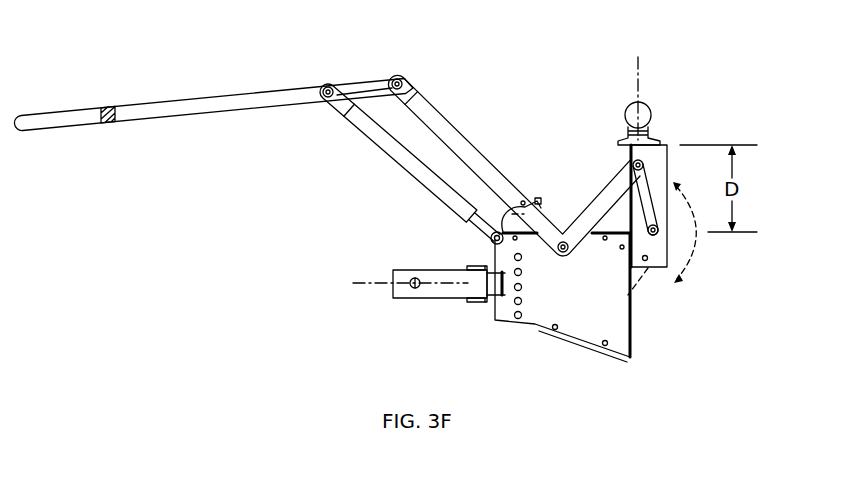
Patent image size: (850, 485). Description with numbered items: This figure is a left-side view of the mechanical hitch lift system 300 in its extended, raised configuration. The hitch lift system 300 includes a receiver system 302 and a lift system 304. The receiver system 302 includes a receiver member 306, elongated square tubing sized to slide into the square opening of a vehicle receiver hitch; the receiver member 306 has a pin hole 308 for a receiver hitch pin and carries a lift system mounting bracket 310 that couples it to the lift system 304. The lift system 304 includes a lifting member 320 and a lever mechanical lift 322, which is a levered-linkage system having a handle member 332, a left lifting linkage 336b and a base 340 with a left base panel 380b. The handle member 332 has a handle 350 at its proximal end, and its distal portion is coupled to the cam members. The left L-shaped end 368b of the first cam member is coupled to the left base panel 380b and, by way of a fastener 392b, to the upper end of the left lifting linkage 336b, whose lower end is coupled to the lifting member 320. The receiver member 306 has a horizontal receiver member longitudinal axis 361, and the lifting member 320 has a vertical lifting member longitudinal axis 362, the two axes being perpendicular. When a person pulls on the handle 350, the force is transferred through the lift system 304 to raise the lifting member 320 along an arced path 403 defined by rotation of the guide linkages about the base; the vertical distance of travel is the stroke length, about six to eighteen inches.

The hitch lift system 300 is at (767, 62).
The receiver system 302 is at (409, 295).
The lift system 304 is at (671, 114).
The receiver member 306 is at (429, 308).
The pin hole 308 is at (413, 277).
The lift system mounting bracket 310 is at (473, 263).
The lifting member 320 is at (658, 286).
The lever mechanical lift 322 is at (478, 107).
The handle member 332 is at (132, 90).
The left lifting linkage 336b is at (640, 188).
The base 340 is at (603, 360).
The handle 350 is at (121, 128).
The receiver member longitudinal axis 361 is at (368, 282).
The lifting member longitudinal axis 362 is at (647, 74).
The left L-shaped end 368b is at (589, 225).
The left base panel 380b is at (563, 333).
The fastener 392b is at (631, 163).
The arced path 403 is at (693, 268).